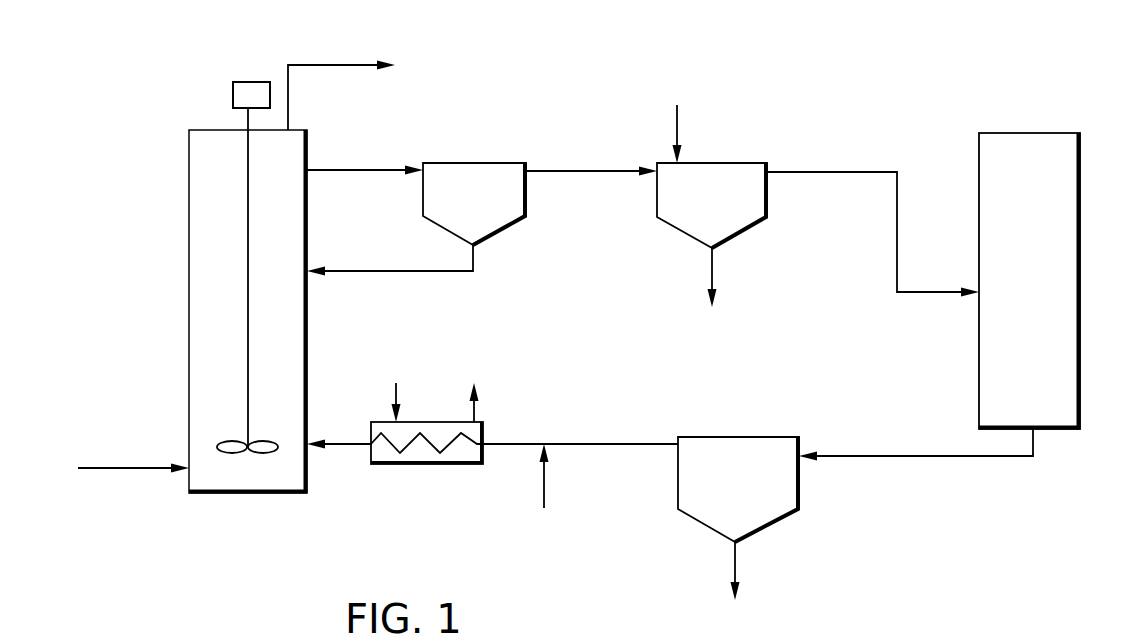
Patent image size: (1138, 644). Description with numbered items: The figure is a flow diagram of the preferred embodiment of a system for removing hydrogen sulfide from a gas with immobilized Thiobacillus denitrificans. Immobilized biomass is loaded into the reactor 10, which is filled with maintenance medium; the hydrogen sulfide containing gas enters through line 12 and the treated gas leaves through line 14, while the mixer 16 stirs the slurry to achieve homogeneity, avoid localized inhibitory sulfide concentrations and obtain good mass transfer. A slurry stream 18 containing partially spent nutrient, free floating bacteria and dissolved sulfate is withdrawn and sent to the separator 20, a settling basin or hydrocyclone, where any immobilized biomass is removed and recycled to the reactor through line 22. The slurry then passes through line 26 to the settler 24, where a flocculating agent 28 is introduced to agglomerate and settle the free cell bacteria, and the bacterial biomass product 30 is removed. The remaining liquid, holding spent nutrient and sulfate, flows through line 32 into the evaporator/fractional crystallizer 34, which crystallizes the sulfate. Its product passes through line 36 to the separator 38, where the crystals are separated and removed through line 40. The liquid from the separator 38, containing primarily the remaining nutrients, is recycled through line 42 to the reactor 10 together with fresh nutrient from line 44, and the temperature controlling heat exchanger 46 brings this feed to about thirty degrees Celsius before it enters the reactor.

The reactor 10 is at (190, 220).
The line 12 is at (122, 469).
The line 14 is at (325, 65).
The mixer 16 is at (265, 444).
The slurry stream 18 is at (352, 170).
The separator 20 is at (492, 171).
The line 22 is at (410, 271).
The settler 24 is at (752, 180).
The line 26 is at (574, 171).
The flocculating agent 28 is at (678, 130).
The bacterial biomass product 30 is at (712, 274).
The line 32 is at (858, 172).
The evaporator/fractional crystallizer 34 is at (1074, 223).
The line 36 is at (964, 456).
The separator 38 is at (786, 494).
The line 40 is at (735, 564).
The line 42 is at (613, 444).
The line 44 is at (544, 502).
The heat exchanger 46 is at (450, 462).